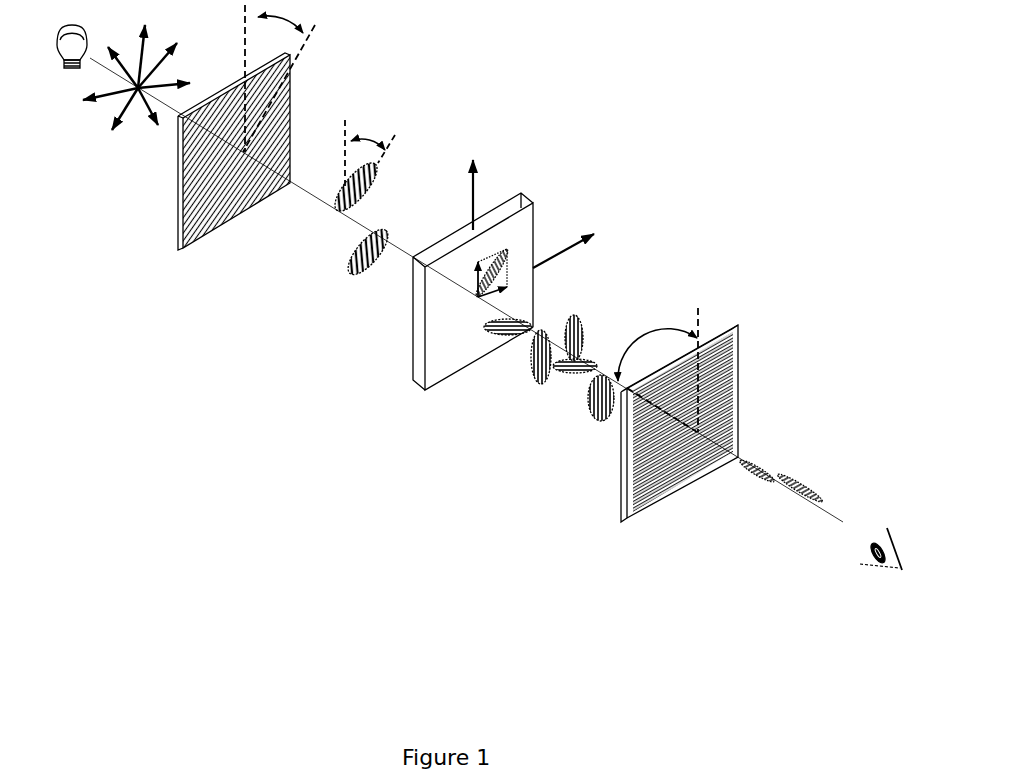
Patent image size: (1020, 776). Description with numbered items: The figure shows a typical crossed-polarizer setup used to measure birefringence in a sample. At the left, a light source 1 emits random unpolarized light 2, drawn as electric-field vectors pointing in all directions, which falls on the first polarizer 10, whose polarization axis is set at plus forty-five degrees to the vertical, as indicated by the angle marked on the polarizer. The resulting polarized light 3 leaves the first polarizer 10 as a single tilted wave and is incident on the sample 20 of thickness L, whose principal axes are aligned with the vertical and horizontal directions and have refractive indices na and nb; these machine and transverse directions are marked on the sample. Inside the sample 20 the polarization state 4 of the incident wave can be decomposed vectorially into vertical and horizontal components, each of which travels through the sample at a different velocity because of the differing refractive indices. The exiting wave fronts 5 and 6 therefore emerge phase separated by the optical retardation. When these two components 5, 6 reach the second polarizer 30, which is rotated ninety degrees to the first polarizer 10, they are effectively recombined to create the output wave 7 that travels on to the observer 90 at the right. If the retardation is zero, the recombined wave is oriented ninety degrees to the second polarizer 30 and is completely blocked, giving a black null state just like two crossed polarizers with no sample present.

The light source 1 is at (55, 70).
The unpolarized light 2 is at (100, 133).
The first polarizer 10 is at (176, 228).
The polarized light 3 is at (340, 222).
The sample 20 is at (410, 368).
The polarization state in the film 4 is at (488, 287).
The exiting wave front 5 is at (558, 377).
The exiting wave front 6 is at (592, 403).
The second polarizer 30 is at (620, 497).
The output wave 7 is at (775, 485).
The observer 90 is at (875, 572).